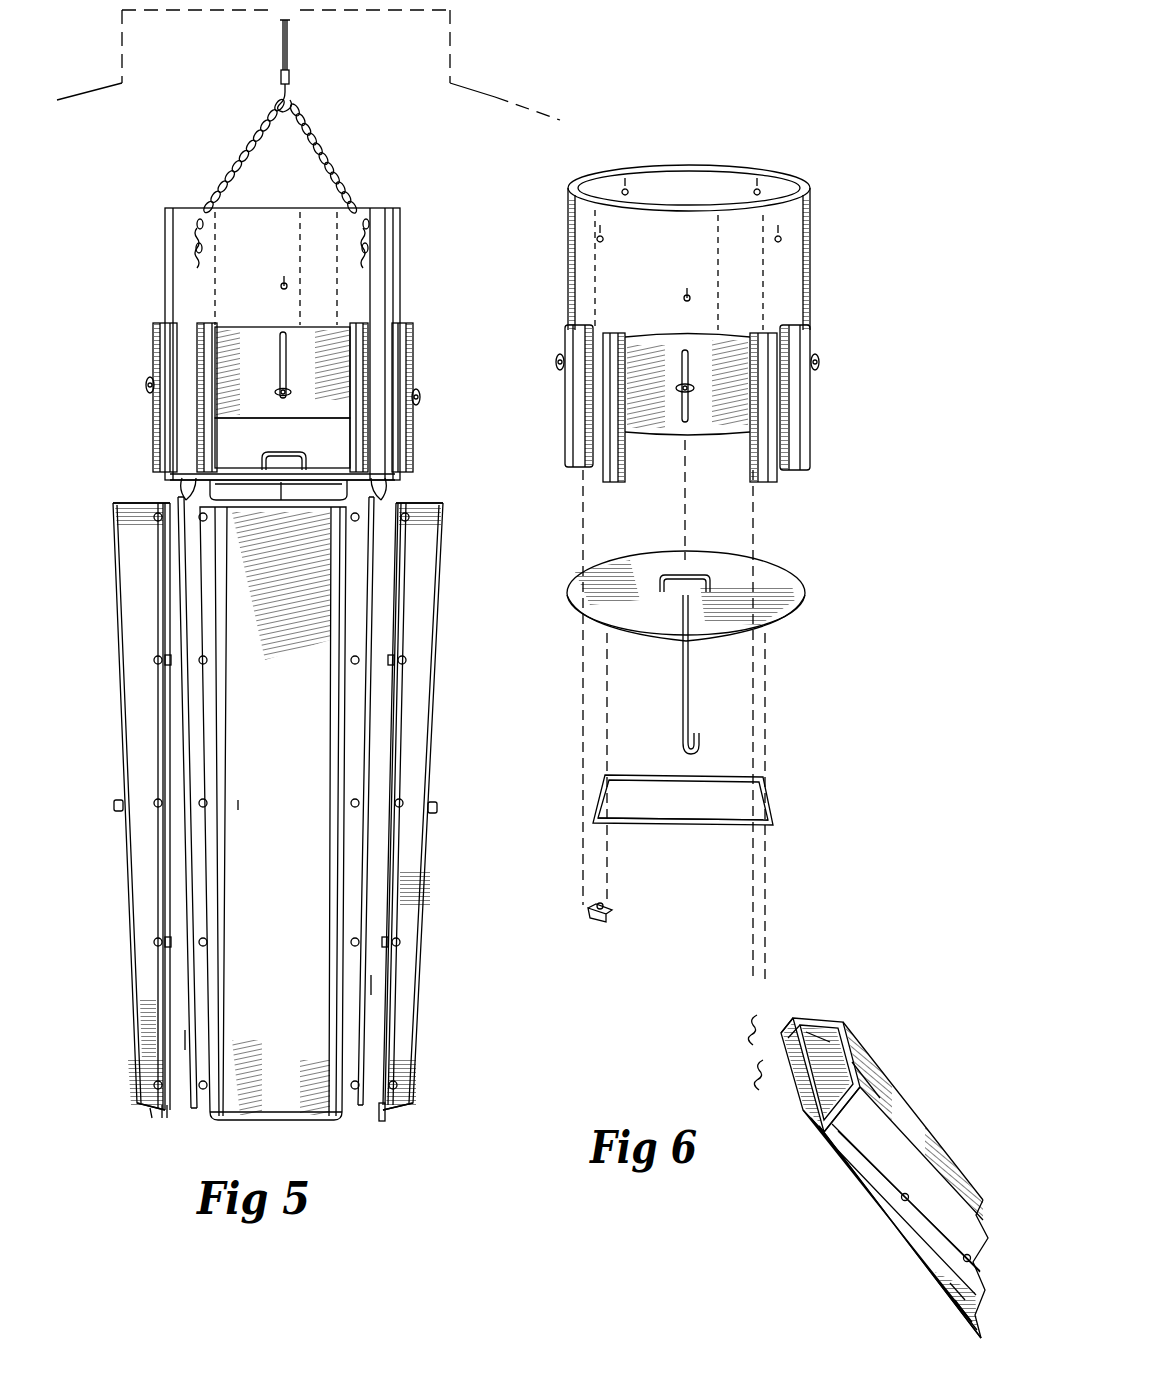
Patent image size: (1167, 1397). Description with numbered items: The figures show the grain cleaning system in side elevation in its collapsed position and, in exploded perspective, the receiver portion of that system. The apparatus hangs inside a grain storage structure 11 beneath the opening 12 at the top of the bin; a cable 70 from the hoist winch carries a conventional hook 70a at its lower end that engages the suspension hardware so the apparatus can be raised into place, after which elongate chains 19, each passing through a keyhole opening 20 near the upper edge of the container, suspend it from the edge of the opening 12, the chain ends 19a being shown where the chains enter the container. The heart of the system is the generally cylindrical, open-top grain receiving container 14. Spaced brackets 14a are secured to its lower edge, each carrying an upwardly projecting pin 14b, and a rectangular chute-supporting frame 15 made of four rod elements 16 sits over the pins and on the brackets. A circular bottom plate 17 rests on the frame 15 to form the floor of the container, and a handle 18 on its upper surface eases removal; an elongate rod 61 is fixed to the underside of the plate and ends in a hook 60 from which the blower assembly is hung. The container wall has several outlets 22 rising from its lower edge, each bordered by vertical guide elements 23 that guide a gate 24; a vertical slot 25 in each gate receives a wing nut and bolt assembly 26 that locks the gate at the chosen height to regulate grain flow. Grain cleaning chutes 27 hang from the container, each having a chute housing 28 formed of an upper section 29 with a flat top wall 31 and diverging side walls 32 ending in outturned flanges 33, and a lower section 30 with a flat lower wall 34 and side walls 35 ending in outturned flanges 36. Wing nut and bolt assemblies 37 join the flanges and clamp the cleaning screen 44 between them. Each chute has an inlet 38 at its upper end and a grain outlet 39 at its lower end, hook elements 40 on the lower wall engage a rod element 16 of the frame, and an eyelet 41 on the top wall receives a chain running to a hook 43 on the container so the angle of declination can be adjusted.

In FIG. 5, the grain storage structure 11 is at (497, 95).
In FIG. 5, the opening 12 is at (440, 10).
In FIG. 5, the grain receiving container 14 is at (390, 206).
In FIG. 6, the grain receiving container 14 is at (815, 166).
In FIG. 6, the brackets 14a is at (780, 470).
In FIG. 6, the pin 14b is at (605, 913).
In FIG. 5, the chute-supporting frame 15 is at (257, 502).
In FIG. 6, the chute-supporting frame 15 is at (772, 778).
In FIG. 6, the rod elements 16 is at (735, 790).
In FIG. 5, the bottom plate 17 is at (247, 472).
In FIG. 6, the bottom plate 17 is at (735, 563).
In FIG. 5, the handle 18 is at (294, 452).
In FIG. 6, the handle 18 is at (672, 573).
In FIG. 5, the chains 19 is at (250, 143).
In FIG. 5, the chain end 19a is at (195, 233).
In FIG. 5, the keyhole opening 20 is at (205, 245).
In FIG. 6, the keyhole opening 20 is at (625, 185).
In FIG. 5, the outlets 22 is at (322, 432).
In FIG. 5, the guide elements 23 is at (152, 342).
In FIG. 6, the guide elements 23 is at (565, 400).
In FIG. 5, the gate 24 is at (270, 371).
In FIG. 6, the gate 24 is at (566, 328).
In FIG. 5, the vertical slot 25 is at (282, 332).
In FIG. 6, the vertical slot 25 is at (683, 420).
In FIG. 5, the wing nut and bolt assembly 26 is at (284, 388).
In FIG. 6, the wing nut and bolt assembly 26 is at (556, 360).
In FIG. 5, the grain cleaning chutes 27 is at (293, 815).
In FIG. 6, the grain cleaning chutes 27 is at (831, 1136).
In FIG. 5, the chute housing 28 is at (120, 722).
In FIG. 6, the chute housing 28 is at (870, 1215).
In FIG. 5, the upper section 29 is at (428, 836).
In FIG. 6, the upper section 29 is at (905, 1110).
In FIG. 5, the lower section 30 is at (378, 880).
In FIG. 6, the lower section 30 is at (913, 1250).
In FIG. 5, the top wall 31 is at (292, 885).
In FIG. 6, the top wall 31 is at (872, 1075).
In FIG. 5, the side walls 32 is at (215, 750).
In FIG. 6, the side walls 32 is at (875, 1125).
In FIG. 5, the outturned flanges 33 is at (408, 627).
In FIG. 6, the outturned flanges 33 is at (812, 1012).
In FIG. 6, the lower wall 34 is at (925, 1273).
In FIG. 5, the side walls 35 is at (380, 982).
In FIG. 6, the side walls 35 is at (958, 1283).
In FIG. 5, the outturned flanges 36 is at (395, 700).
In FIG. 6, the outturned flanges 36 is at (805, 1018).
In FIG. 5, the wing nut and bolt assemblies 37 is at (153, 658).
In FIG. 6, the wing nut and bolt assemblies 37 is at (905, 1195).
In FIG. 5, the inlet 38 is at (135, 505).
In FIG. 6, the inlet 38 is at (835, 1035).
In FIG. 5, the grain outlet 39 is at (152, 1112).
In FIG. 5, the hook elements 40 is at (178, 493).
In FIG. 6, the hook elements 40 is at (756, 1068).
In FIG. 5, the eyelet 41 is at (113, 806).
In FIG. 5, the hook 43 is at (282, 283).
In FIG. 6, the hook 43 is at (682, 295).
In FIG. 6, the cleaning screen 44 is at (815, 1045).
In FIG. 6, the hook 60 is at (697, 742).
In FIG. 5, the elongate rod 61 is at (284, 492).
In FIG. 6, the elongate rod 61 is at (682, 688).
In FIG. 5, the cable 70 is at (278, 30).
In FIG. 5, the hook 70a is at (288, 96).